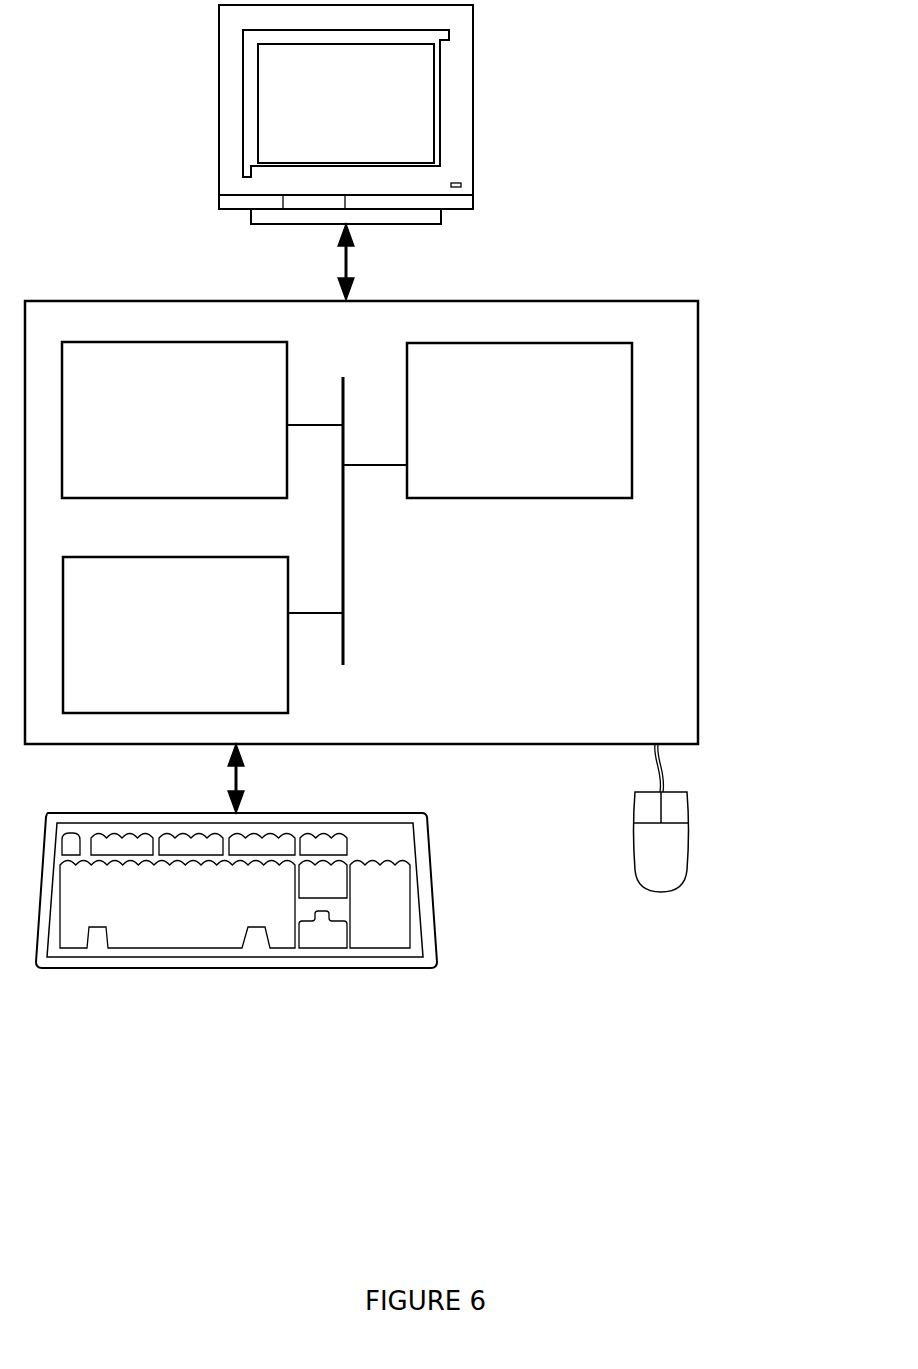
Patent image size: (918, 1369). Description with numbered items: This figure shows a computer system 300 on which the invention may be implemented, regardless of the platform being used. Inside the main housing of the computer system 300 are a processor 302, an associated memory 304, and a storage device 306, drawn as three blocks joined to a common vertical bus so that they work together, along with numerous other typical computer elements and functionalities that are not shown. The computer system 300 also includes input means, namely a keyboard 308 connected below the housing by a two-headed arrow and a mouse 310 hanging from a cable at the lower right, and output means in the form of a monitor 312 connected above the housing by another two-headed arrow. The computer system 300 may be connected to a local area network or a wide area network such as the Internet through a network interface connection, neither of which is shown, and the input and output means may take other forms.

The computer system 300 is at (714, 159).
The processor 302 is at (560, 431).
The associated memory 304 is at (198, 431).
The storage device 306 is at (196, 646).
The keyboard 308 is at (192, 926).
The mouse 310 is at (685, 862).
The monitor 312 is at (368, 120).